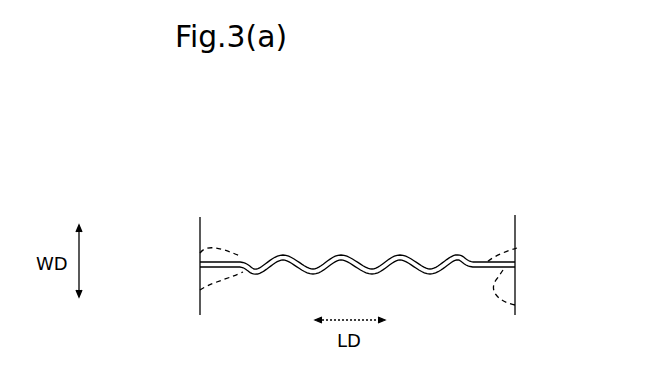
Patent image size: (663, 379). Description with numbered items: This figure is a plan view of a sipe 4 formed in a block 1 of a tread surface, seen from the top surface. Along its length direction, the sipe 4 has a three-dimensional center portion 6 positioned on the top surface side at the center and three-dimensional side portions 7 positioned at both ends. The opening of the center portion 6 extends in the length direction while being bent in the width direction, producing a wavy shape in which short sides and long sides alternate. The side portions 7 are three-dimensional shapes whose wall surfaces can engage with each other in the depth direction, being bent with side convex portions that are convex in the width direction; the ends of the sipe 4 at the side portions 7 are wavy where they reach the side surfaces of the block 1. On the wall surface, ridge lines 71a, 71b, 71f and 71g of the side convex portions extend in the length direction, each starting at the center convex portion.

The block 1 is at (302, 218).
The sipe 4 is at (353, 259).
The 3D center portion 6 is at (418, 260).
The 3D side portions 7 is at (230, 260).
The ridge line 71a is at (217, 297).
The ridge line 71b is at (200, 253).
The ridge line 71f is at (517, 248).
The ridge line 71g is at (515, 305).